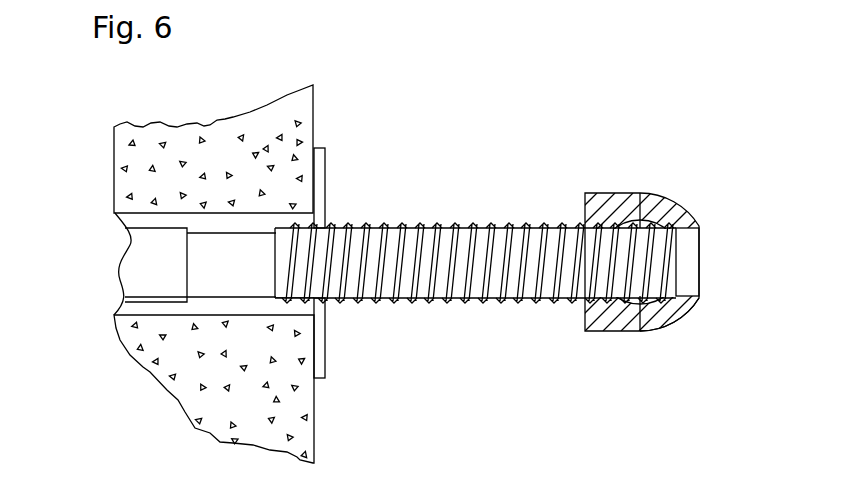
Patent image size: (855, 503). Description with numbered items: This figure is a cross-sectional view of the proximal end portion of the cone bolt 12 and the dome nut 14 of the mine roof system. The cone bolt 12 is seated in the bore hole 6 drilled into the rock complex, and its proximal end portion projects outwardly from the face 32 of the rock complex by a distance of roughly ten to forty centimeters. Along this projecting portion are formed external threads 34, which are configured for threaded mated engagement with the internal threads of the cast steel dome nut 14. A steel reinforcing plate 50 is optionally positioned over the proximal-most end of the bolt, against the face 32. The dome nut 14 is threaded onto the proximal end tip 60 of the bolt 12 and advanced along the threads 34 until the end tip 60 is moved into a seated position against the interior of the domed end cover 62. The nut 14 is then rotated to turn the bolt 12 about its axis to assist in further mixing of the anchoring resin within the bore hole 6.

The bore hole 6 is at (298, 307).
The cone bolt 12 is at (128, 283).
The dome nut 14 is at (553, 229).
The face of the rock complex 32 is at (315, 430).
The external threads 34 is at (407, 228).
The steel reinforcing plate 50 is at (321, 176).
The proximal end tip 60 is at (683, 243).
The domed end cover 62 is at (675, 309).